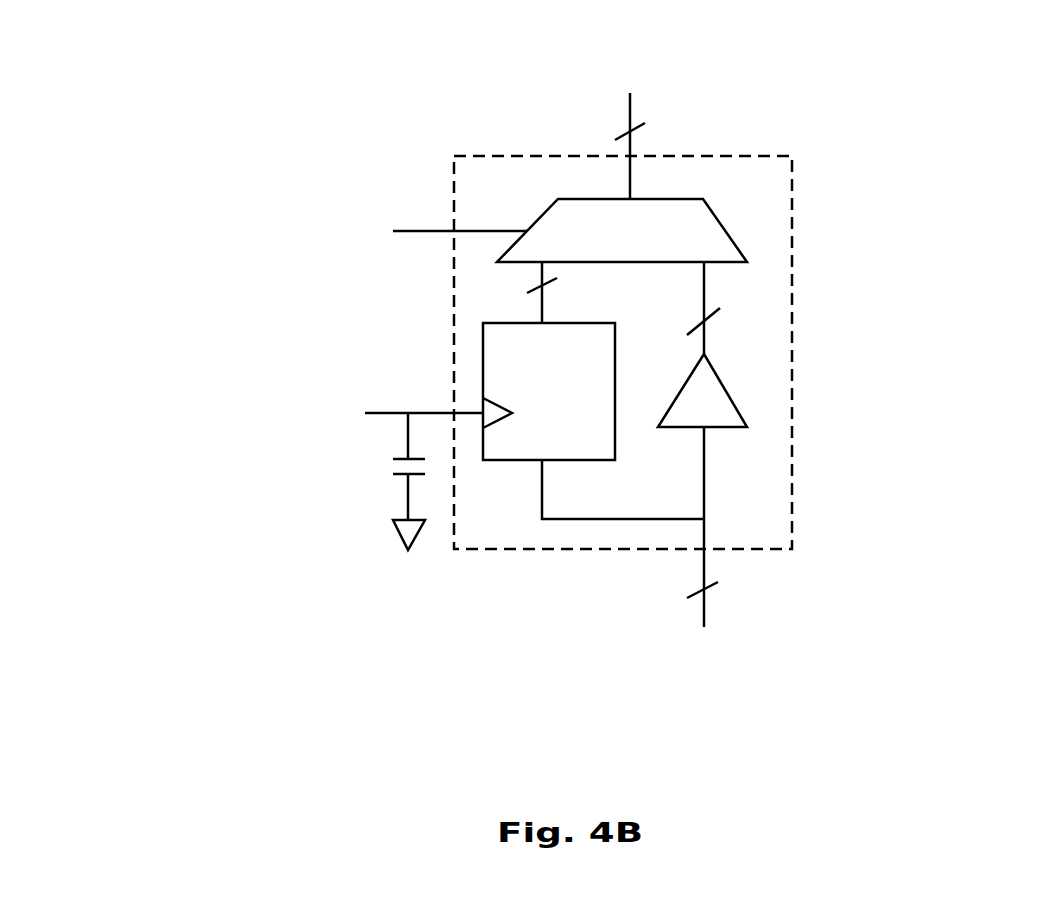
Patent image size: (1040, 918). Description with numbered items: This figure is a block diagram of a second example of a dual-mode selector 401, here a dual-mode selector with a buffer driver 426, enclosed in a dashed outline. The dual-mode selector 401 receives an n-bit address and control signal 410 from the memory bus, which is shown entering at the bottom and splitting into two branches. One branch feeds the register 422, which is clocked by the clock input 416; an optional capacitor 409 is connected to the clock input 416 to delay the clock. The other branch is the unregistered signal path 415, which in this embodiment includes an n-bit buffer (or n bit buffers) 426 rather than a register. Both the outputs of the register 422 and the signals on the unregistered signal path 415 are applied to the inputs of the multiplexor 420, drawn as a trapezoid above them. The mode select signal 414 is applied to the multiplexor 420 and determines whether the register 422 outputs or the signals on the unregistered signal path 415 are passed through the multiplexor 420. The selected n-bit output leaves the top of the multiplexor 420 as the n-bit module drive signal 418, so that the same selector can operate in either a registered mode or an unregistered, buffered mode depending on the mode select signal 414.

The dual-mode selector 401 is at (335, 101).
The capacitor 409 is at (370, 479).
The address and control signal 410 is at (732, 671).
The mode select signal 414 is at (377, 248).
The unregistered signal path 415 is at (732, 297).
The clock input 416 is at (355, 401).
The module drive signal 418 is at (777, 79).
The multiplexor 420 is at (723, 220).
The register 422 is at (572, 426).
The buffer driver 426 is at (732, 432).